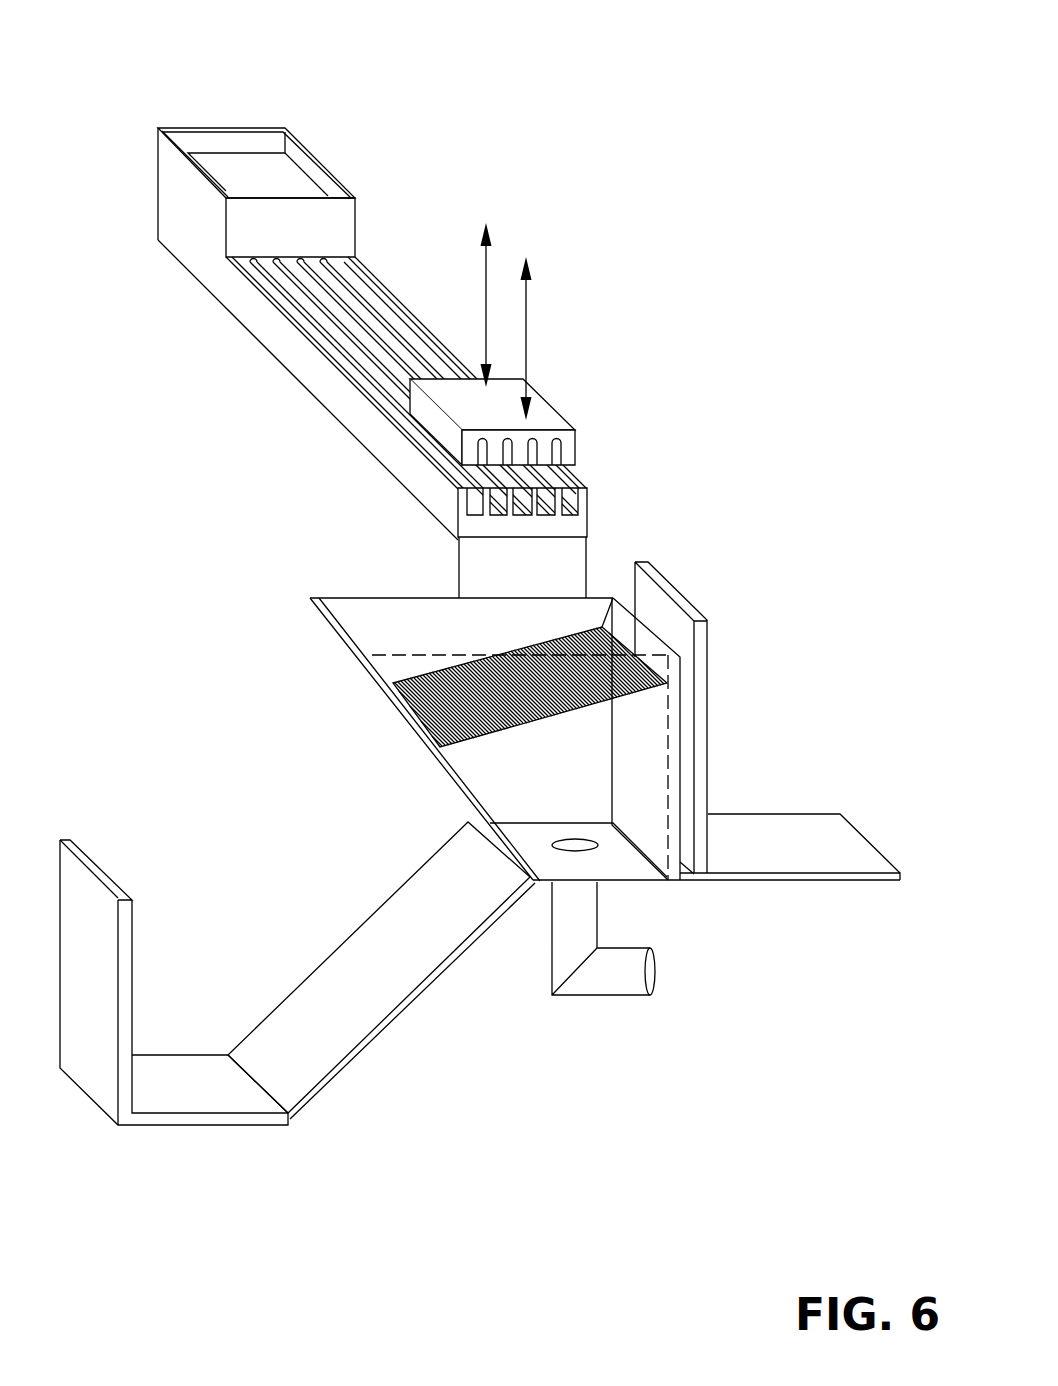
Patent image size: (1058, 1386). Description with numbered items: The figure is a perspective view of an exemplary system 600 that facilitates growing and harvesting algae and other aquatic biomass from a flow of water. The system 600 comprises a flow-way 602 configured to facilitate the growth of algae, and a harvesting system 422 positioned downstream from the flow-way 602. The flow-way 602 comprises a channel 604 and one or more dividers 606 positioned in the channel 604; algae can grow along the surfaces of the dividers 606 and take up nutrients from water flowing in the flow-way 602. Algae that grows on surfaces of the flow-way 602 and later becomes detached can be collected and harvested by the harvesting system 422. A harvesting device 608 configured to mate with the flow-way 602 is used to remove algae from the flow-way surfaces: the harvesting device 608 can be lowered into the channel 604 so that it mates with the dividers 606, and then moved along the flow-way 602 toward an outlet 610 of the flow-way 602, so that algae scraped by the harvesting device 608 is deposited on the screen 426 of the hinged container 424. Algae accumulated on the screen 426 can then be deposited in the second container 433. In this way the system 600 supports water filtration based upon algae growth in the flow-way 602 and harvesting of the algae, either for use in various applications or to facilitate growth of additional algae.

The system 600 is at (847, 32).
The flow-way 602 is at (230, 368).
The channel 604 is at (358, 440).
The dividers 606 is at (560, 512).
The harvesting device 608 is at (544, 421).
The outlet 610 is at (591, 523).
The harvesting system 422 is at (217, 600).
The hinged container 424 is at (404, 617).
The screen 426 is at (603, 626).
The second container 433 is at (232, 1108).